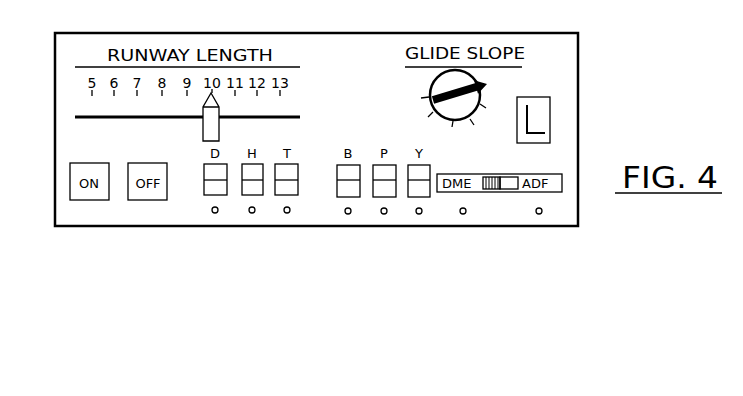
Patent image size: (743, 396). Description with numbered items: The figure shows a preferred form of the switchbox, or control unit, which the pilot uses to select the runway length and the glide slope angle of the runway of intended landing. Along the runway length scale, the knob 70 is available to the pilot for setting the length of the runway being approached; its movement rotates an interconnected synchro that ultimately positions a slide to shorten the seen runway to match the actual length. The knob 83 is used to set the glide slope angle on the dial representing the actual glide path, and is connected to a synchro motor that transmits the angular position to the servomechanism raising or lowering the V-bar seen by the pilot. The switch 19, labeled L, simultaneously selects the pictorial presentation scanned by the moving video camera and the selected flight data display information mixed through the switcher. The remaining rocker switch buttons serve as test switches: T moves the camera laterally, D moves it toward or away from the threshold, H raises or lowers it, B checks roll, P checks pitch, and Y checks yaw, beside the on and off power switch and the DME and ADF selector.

The knob 70 is at (203, 118).
The knob 83 is at (477, 117).
The switch 19 is at (550, 137).